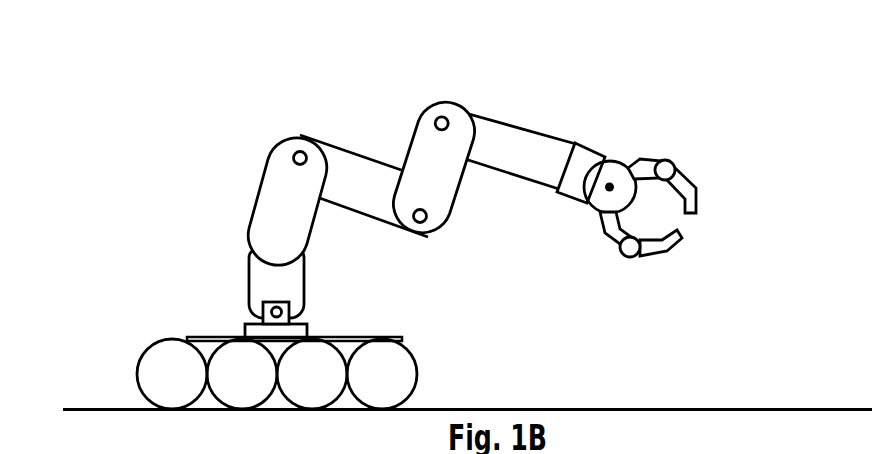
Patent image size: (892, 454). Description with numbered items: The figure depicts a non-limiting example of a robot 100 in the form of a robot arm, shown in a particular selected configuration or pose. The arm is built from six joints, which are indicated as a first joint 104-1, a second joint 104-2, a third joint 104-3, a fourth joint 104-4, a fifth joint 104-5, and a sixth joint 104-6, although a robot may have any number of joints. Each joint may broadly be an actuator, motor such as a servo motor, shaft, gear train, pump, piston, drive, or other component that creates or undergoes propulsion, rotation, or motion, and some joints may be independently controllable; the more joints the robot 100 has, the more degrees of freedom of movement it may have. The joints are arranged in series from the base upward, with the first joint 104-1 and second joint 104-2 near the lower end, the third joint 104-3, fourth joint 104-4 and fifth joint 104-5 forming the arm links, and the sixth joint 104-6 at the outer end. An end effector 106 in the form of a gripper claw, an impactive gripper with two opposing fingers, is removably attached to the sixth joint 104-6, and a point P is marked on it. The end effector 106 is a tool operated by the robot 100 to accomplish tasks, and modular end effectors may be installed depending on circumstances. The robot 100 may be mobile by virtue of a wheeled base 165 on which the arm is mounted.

The robot 100 is at (122, 168).
The first joint 104-1 is at (262, 311).
The second joint 104-2 is at (271, 250).
The third joint 104-3 is at (293, 139).
The fourth joint 104-4 is at (423, 222).
The fifth joint 104-5 is at (438, 100).
The sixth joint 104-6 is at (587, 145).
The end effector 106 is at (702, 164).
The wheeled base 165 is at (347, 337).
The tool center point P is at (611, 182).